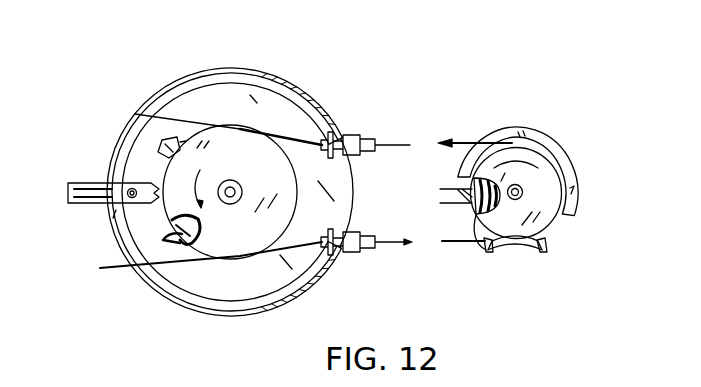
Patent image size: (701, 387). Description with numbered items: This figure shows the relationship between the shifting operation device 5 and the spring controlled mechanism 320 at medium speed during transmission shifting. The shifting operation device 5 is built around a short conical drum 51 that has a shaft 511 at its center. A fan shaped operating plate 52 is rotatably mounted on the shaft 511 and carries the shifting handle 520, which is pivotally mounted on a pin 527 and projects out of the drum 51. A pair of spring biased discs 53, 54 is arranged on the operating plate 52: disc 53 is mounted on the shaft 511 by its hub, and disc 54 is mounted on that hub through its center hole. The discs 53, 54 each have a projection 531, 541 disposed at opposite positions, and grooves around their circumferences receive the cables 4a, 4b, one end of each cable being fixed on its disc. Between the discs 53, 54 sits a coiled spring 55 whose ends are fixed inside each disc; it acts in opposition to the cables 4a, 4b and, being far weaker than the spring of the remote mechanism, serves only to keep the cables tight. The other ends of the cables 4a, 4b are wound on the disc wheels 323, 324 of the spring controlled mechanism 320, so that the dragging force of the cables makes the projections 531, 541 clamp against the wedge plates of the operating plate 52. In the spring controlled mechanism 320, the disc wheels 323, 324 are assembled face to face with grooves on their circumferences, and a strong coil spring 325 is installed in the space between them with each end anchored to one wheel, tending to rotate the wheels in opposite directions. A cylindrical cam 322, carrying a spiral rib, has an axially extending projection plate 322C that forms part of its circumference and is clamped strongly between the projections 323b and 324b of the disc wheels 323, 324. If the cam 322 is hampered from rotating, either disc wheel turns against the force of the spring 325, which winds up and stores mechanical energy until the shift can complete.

The shifting operation device 5 is at (231, 60).
The conical drum 51 is at (170, 84).
The operating plate 52 is at (170, 152).
The spring biased disc 53 is at (190, 250).
The spring biased disc 54 is at (282, 158).
The coil spring 55 is at (203, 228).
The shaft 511 is at (243, 196).
The shifting handle 520 is at (80, 183).
The pin 527 is at (113, 218).
The projection 531 is at (168, 232).
The projection 541 is at (164, 154).
The cable 4a is at (458, 142).
The cable 4b is at (460, 240).
The spring controlled mechanism 320 is at (515, 108).
The cylindrical cam 322 is at (566, 148).
The projection plate 322C is at (525, 262).
The disc wheel 323 is at (460, 188).
The projection 323b is at (548, 250).
The disc wheel 324 is at (565, 226).
The projection 324b is at (490, 256).
The coil spring 325 is at (452, 199).